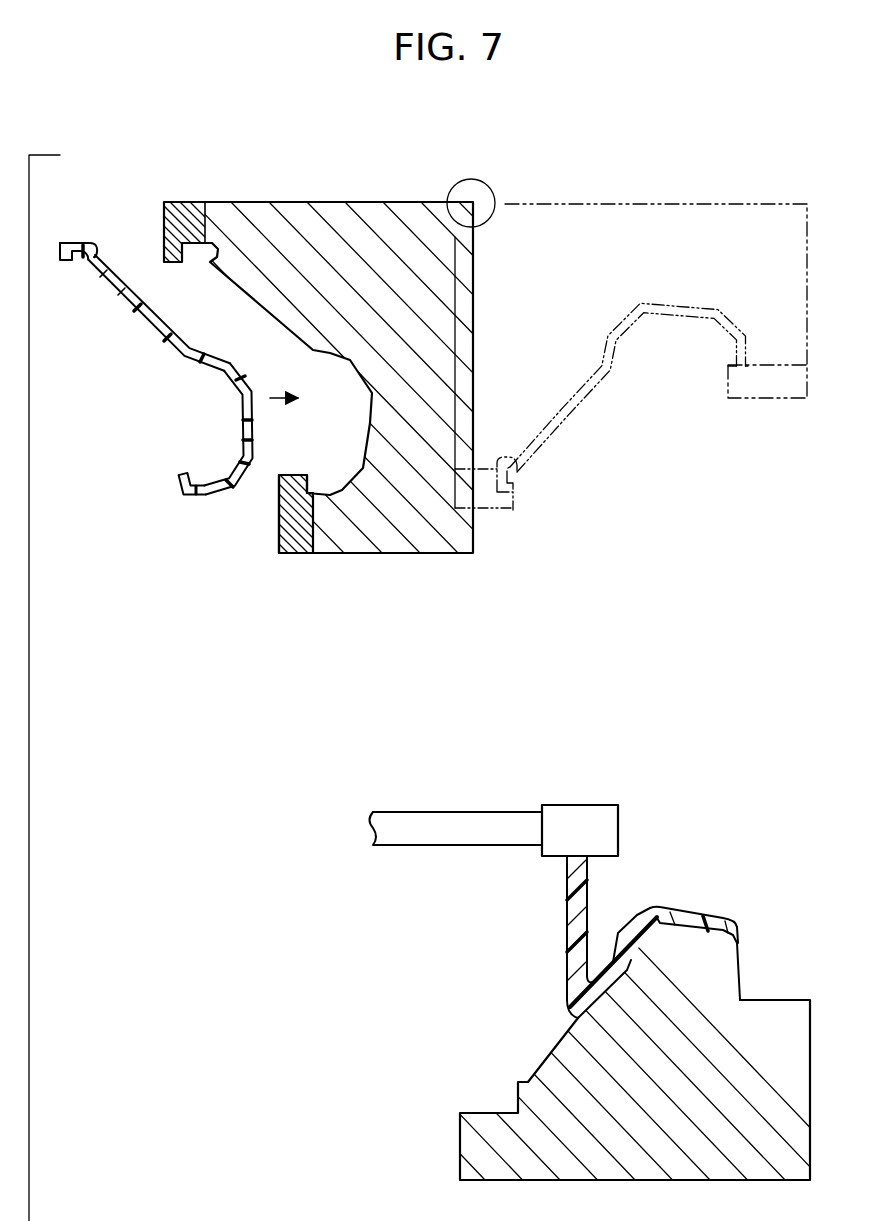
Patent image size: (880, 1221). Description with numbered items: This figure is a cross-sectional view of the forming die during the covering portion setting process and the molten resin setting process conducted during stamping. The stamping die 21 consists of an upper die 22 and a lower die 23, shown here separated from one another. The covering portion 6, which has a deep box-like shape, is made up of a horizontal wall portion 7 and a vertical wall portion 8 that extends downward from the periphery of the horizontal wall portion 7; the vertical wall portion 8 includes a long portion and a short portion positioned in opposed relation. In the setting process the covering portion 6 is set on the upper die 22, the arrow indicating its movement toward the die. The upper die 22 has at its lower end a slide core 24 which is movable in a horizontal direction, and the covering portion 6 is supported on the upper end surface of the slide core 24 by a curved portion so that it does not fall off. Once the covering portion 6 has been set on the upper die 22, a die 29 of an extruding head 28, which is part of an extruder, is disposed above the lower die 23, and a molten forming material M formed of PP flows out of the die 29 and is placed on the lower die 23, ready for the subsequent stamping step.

The covering portion 6 is at (180, 502).
The horizontal wall portion 7 is at (245, 408).
The vertical wall portion 8 is at (135, 312).
The stamping die 21 is at (734, 184).
The upper die 22 is at (331, 215).
The lower die 23 is at (460, 1143).
The slide core 24 is at (296, 553).
The extruding head 28 is at (503, 790).
The die 29 is at (578, 820).
The molten forming material M is at (643, 912).